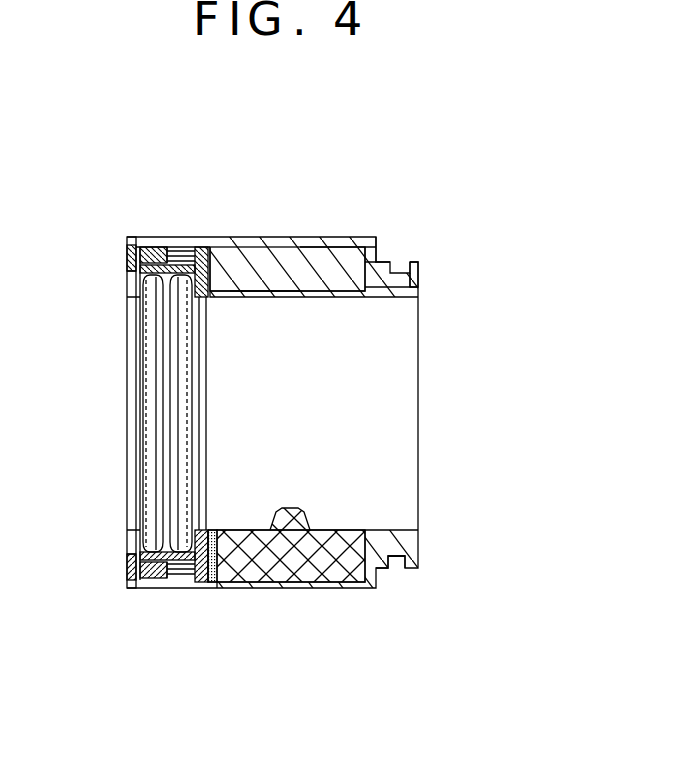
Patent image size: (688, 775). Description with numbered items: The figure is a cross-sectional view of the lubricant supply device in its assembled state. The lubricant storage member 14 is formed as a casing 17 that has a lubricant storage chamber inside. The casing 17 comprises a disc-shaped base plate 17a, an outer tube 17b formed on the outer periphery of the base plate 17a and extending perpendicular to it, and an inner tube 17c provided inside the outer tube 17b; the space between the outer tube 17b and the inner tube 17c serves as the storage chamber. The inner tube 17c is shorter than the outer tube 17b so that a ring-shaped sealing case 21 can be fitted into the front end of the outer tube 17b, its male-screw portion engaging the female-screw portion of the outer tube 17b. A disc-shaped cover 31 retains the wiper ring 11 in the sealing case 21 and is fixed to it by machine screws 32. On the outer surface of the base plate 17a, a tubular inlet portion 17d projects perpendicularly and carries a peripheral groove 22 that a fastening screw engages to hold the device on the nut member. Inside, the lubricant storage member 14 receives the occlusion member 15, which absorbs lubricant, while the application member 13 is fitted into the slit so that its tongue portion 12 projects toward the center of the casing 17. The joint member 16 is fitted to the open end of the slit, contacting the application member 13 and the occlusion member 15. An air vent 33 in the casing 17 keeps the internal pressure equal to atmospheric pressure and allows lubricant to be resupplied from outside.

The wiper ring 11 is at (160, 388).
The tongue portion 12 is at (303, 512).
The application member 13 is at (310, 570).
The lubricant storage member 14 is at (348, 263).
The occlusion member 15 is at (237, 258).
The joint member 16 is at (230, 580).
The casing 17 is at (290, 232).
The base plate 17a is at (380, 252).
The outer tube 17b is at (322, 247).
The inner tube 17c is at (257, 290).
The inlet portion 17d is at (400, 547).
The sealing case 21 is at (195, 247).
The groove 22 is at (398, 560).
The cover 31 is at (127, 285).
The machine screws 32 is at (142, 243).
The air vent 33 is at (402, 270).